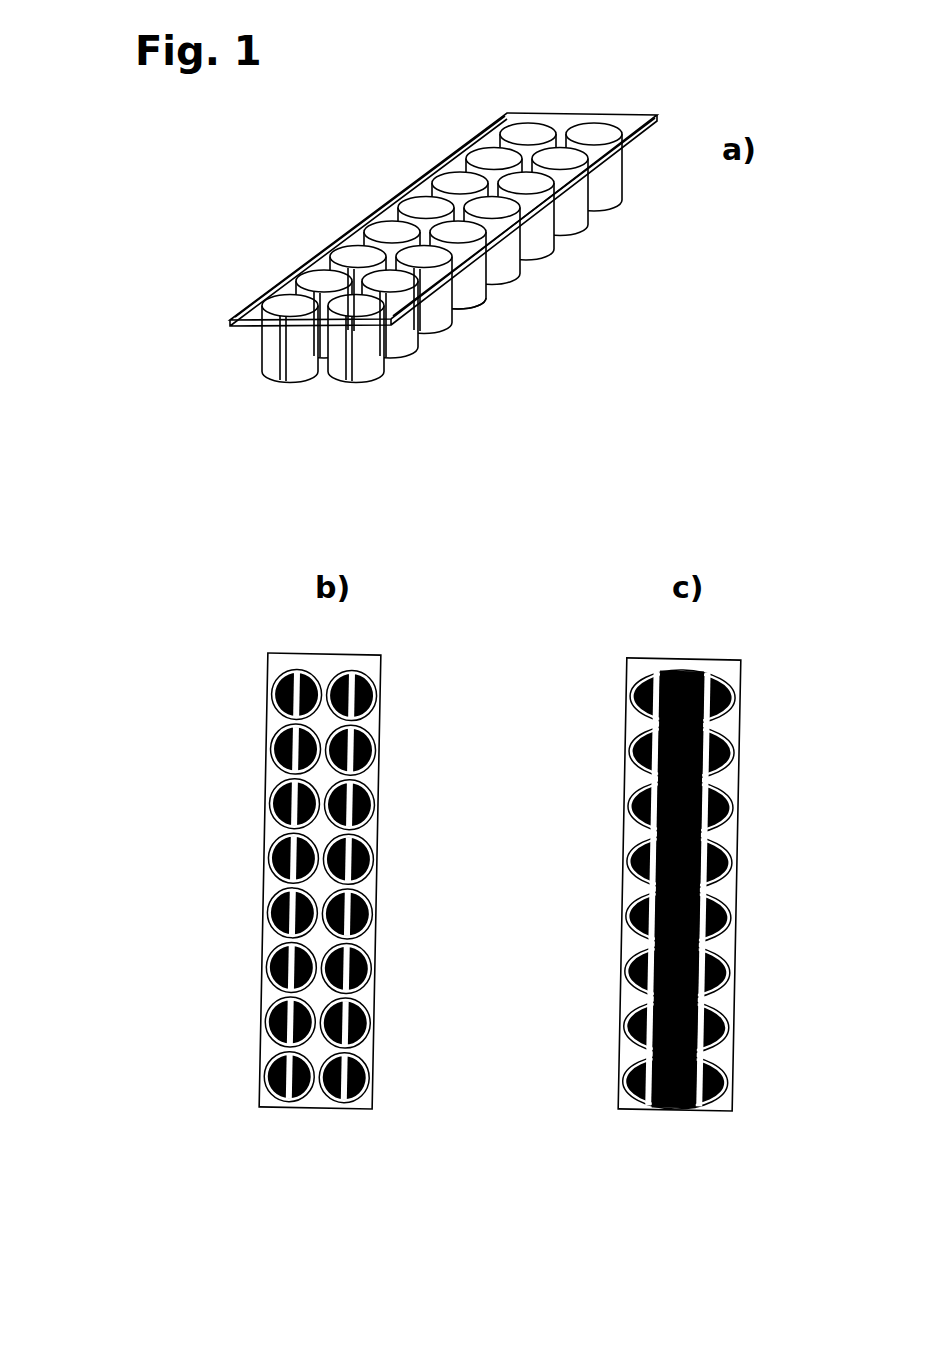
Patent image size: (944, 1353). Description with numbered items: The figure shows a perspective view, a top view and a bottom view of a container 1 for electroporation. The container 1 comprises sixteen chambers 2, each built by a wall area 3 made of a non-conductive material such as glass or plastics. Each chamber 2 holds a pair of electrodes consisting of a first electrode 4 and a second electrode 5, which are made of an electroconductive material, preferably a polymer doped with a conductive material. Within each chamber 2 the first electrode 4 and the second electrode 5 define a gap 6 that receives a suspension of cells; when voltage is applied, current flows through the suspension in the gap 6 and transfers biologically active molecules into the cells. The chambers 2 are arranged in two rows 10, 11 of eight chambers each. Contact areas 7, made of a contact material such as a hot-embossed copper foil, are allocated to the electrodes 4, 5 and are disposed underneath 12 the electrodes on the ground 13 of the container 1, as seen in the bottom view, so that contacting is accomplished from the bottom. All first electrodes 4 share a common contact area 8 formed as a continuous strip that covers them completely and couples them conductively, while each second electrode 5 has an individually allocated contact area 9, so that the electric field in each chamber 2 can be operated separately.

The container 1 is at (629, 297).
The chamber 2 is at (621, 198).
The wall area 3 is at (273, 303).
The first electrode 4 is at (378, 372).
The second electrode 5 is at (268, 350).
The gap 6 is at (282, 383).
The contact area 7 is at (272, 973).
The contact area 8 is at (673, 1112).
The contact area 9 is at (730, 858).
The row 10 is at (637, 1113).
The row 11 is at (718, 1113).
The underneath 12 is at (728, 962).
The ground 13 is at (477, 317).